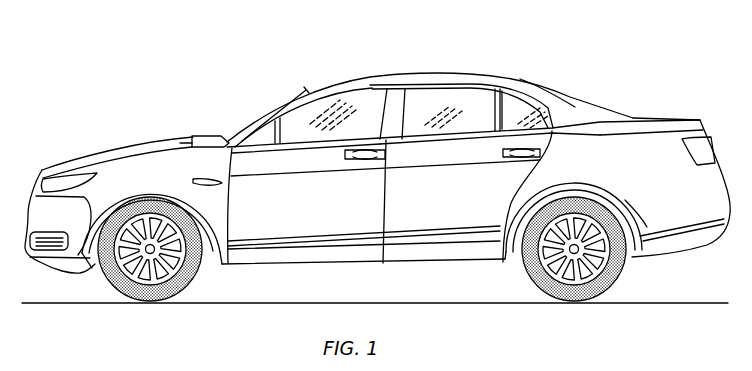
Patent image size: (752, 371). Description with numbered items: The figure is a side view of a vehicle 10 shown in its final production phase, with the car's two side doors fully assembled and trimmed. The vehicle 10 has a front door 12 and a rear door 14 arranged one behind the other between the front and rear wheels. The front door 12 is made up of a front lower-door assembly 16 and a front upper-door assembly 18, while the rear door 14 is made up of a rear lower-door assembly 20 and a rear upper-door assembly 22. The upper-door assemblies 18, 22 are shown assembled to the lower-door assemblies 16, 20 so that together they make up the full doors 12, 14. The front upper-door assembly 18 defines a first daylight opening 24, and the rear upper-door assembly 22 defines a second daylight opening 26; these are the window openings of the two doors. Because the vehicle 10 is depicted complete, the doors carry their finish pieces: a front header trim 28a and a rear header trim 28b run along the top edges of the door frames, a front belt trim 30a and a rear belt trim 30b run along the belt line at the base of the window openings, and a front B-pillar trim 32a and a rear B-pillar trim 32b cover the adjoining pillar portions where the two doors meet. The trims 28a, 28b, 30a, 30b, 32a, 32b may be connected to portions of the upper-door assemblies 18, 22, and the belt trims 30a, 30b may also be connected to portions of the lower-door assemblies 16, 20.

The vehicle 10 is at (172, 55).
The front door 12 is at (270, 212).
The rear door 14 is at (475, 200).
The front lower-door assembly 16 is at (358, 210).
The front upper-door assembly 18 is at (302, 118).
The rear lower-door assembly 20 is at (413, 212).
The rear upper-door assembly 22 is at (510, 103).
The first daylight opening 24 is at (360, 107).
The second daylight opening 26 is at (463, 97).
The front header trim 28a is at (243, 142).
The rear header trim 28b is at (548, 108).
The front belt trim 30a is at (330, 143).
The rear belt trim 30b is at (482, 137).
The front B-pillar trim 32a is at (392, 93).
The rear B-pillar trim 32b is at (405, 93).